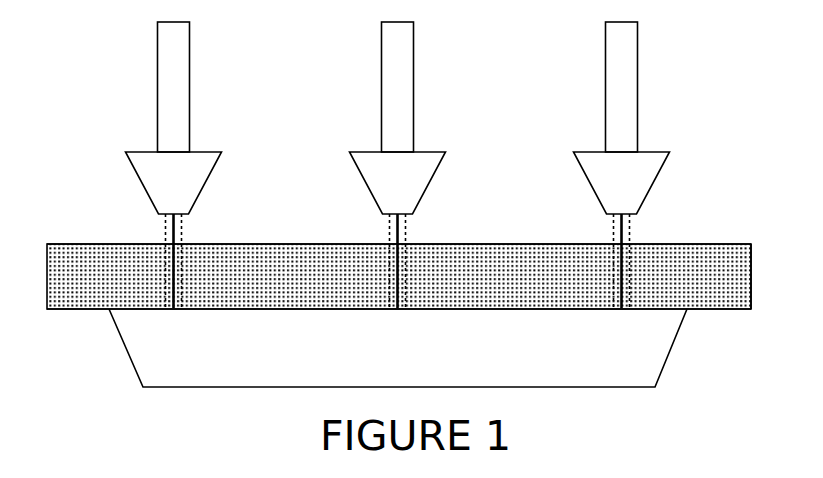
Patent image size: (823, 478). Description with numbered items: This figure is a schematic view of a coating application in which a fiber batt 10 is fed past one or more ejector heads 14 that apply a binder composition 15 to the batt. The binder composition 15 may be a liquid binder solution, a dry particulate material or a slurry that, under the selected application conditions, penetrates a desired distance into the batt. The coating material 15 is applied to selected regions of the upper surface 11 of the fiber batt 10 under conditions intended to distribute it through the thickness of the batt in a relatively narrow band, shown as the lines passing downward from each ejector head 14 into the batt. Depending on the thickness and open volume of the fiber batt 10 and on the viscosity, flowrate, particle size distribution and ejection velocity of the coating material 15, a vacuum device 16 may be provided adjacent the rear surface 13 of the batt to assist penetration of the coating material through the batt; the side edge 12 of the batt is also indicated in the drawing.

The fiber batt 10 is at (708, 268).
The upper surface 11 is at (109, 242).
The side edge of substrate 12 is at (751, 278).
The rear surface 13 is at (79, 310).
The ejector head 14 is at (658, 175).
The binder composition 15 is at (612, 230).
The vacuum device 16 is at (672, 353).